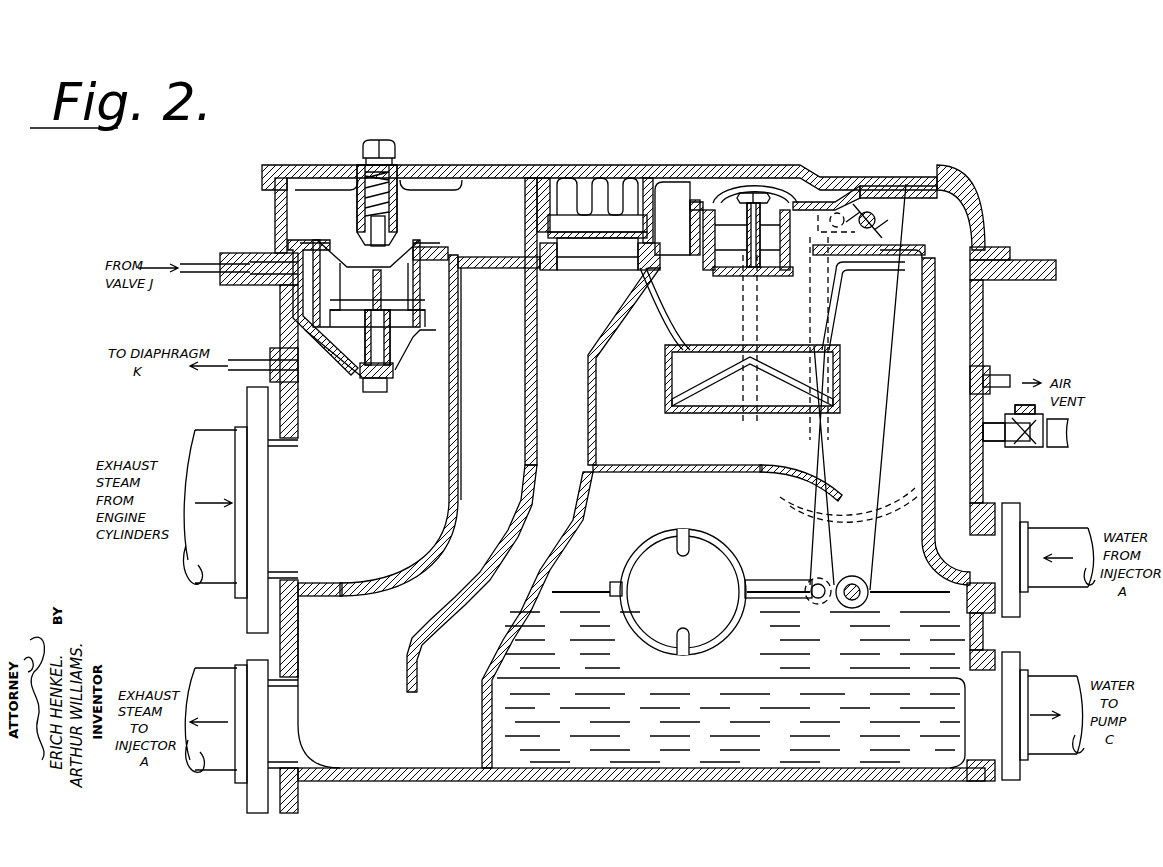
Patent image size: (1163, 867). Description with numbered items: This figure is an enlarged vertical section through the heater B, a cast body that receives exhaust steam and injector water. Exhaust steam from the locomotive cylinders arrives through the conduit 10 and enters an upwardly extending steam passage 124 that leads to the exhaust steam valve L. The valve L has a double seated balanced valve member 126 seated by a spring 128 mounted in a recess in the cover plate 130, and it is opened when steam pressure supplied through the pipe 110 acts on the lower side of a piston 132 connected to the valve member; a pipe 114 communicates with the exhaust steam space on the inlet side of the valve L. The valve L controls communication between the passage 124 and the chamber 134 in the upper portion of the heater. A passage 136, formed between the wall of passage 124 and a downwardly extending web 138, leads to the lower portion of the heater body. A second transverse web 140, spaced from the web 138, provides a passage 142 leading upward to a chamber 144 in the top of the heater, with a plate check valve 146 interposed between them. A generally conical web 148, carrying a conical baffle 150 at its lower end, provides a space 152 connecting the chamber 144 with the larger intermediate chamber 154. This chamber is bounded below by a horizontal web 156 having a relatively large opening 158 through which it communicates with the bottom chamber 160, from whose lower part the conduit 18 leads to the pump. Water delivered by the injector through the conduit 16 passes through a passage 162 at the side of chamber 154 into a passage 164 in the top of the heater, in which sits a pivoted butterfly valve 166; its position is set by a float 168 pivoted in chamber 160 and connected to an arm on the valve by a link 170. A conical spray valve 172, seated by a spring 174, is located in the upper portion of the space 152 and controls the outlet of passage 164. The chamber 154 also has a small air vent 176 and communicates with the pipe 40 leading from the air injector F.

The exhaust steam conduit 10 is at (215, 438).
The injector delivery conduit 16 is at (1050, 540).
The pump suction conduit 18 is at (1052, 760).
The air injector pipe 40 is at (994, 426).
The pipe from change-over valve 110 is at (201, 263).
The pipe to diaphragm valve 114 is at (238, 358).
The steam passage 124 is at (343, 563).
The double seated balanced valve member 126 is at (347, 258).
The spring 128 is at (397, 205).
The cover plate 130 is at (350, 170).
The piston 132 is at (362, 372).
The upper chamber 134 is at (447, 212).
The passage 136 is at (450, 437).
The downwardly extending web 138 is at (521, 470).
The second transverse web 140 is at (596, 389).
The passage 142 is at (532, 346).
The top chamber 144 is at (672, 212).
The plate check valve 146 is at (575, 230).
The conical web 148 is at (668, 298).
The conical baffle 150 is at (790, 396).
The space 152 is at (705, 332).
The intermediate chamber 154 is at (693, 438).
The horizontal web 156 is at (740, 474).
The opening 158 is at (810, 498).
The bottom chamber 160 is at (598, 521).
The side passage 162 is at (960, 338).
The top passage 164 is at (878, 205).
The pivoted butterfly valve 166 is at (884, 226).
The float 168 is at (680, 530).
The link 170 is at (817, 545).
The conical spray valve 172 is at (757, 277).
The spring 174 is at (778, 196).
The air vent 176 is at (1004, 376).
The heater B is at (996, 238).
The air injector F is at (1050, 418).
The exhaust steam valve L is at (400, 350).